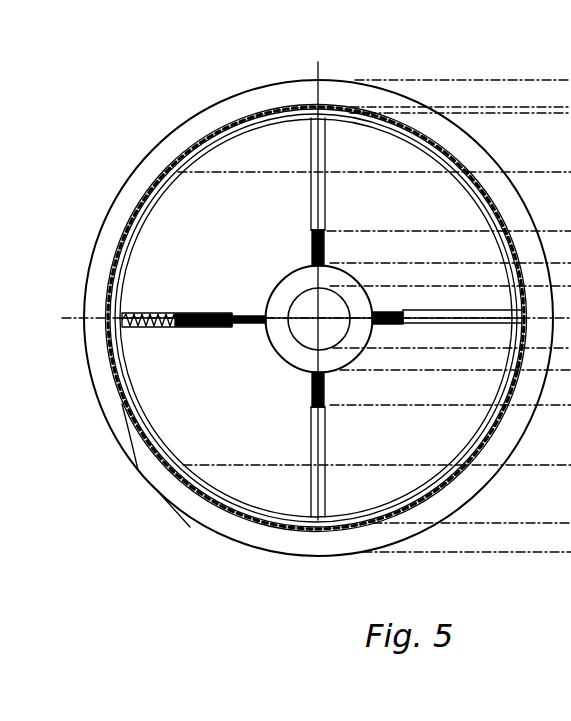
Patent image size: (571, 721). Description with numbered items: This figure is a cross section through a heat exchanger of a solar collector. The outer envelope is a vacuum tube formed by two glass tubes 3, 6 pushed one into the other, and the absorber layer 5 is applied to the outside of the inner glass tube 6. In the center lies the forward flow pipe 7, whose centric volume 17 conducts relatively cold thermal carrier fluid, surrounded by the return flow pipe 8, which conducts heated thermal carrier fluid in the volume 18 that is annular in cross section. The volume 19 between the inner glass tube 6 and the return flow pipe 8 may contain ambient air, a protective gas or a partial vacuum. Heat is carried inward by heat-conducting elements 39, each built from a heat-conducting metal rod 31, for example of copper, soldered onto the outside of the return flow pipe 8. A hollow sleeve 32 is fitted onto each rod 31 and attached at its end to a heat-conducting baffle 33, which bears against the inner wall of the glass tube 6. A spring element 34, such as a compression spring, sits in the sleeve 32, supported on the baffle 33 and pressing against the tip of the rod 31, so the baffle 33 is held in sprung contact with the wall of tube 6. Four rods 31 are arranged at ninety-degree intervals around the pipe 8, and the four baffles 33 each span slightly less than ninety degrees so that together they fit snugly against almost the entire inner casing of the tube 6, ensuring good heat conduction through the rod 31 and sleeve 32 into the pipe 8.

The glass tube 3 is at (85, 282).
The absorber layer 5 is at (110, 364).
The glass tube 6 is at (125, 404).
The forward flow pipe 7 is at (297, 338).
The return flow pipe 8 is at (281, 356).
The centric volume 17 is at (325, 332).
The annular volume 18 is at (302, 357).
The volume 19 is at (178, 230).
The heat-conducting metal rod 31 is at (326, 248).
The hollow sleeve 32 is at (326, 197).
The heat-conducting baffle 33 is at (442, 162).
The spring element 34 is at (142, 313).
The heat-conducting element 39 is at (296, 157).